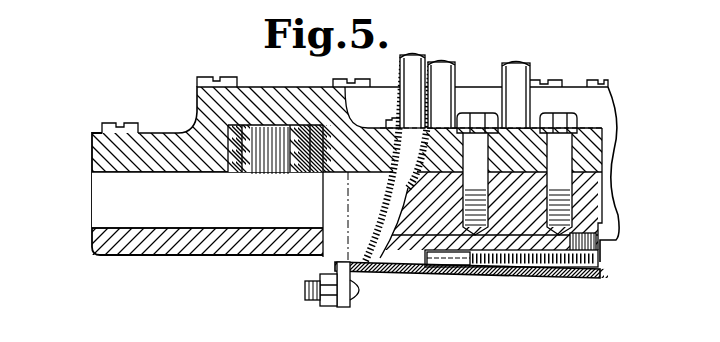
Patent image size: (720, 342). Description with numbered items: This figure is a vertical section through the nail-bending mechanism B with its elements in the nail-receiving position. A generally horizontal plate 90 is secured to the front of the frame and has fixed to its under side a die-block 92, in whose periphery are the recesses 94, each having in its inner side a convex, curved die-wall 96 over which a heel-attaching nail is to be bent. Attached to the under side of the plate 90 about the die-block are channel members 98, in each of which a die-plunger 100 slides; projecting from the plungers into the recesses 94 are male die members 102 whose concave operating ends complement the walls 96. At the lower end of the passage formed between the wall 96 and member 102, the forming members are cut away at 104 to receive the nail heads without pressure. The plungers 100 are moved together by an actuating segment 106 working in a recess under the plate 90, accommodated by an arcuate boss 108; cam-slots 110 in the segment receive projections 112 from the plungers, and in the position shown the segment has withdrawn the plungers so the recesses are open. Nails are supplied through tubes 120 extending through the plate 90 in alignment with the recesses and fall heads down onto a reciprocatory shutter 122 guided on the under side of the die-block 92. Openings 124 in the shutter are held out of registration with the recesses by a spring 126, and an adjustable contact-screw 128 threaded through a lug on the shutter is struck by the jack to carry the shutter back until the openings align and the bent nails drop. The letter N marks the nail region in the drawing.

The plate 90 is at (161, 133).
The die-block 92 is at (598, 207).
The recesses 94 is at (363, 233).
The convex wall 96 is at (394, 129).
The channel members 98 is at (183, 250).
The die-plunger 100 is at (100, 196).
The male die members 102 is at (356, 186).
The cut-away 104 is at (371, 271).
The actuating segment 106 is at (231, 158).
The arcuate boss 108 is at (228, 87).
The cam-slots 110 is at (250, 163).
The projections 112 is at (360, 171).
The tubes 120 is at (447, 65).
The reciprocatory shutter 122 is at (572, 279).
The openings 124 is at (408, 265).
The spring 126 is at (598, 270).
The adjustable contact-screw 128 is at (362, 301).
The passage N is at (366, 213).
The nail-bending mechanism B is at (491, 145).